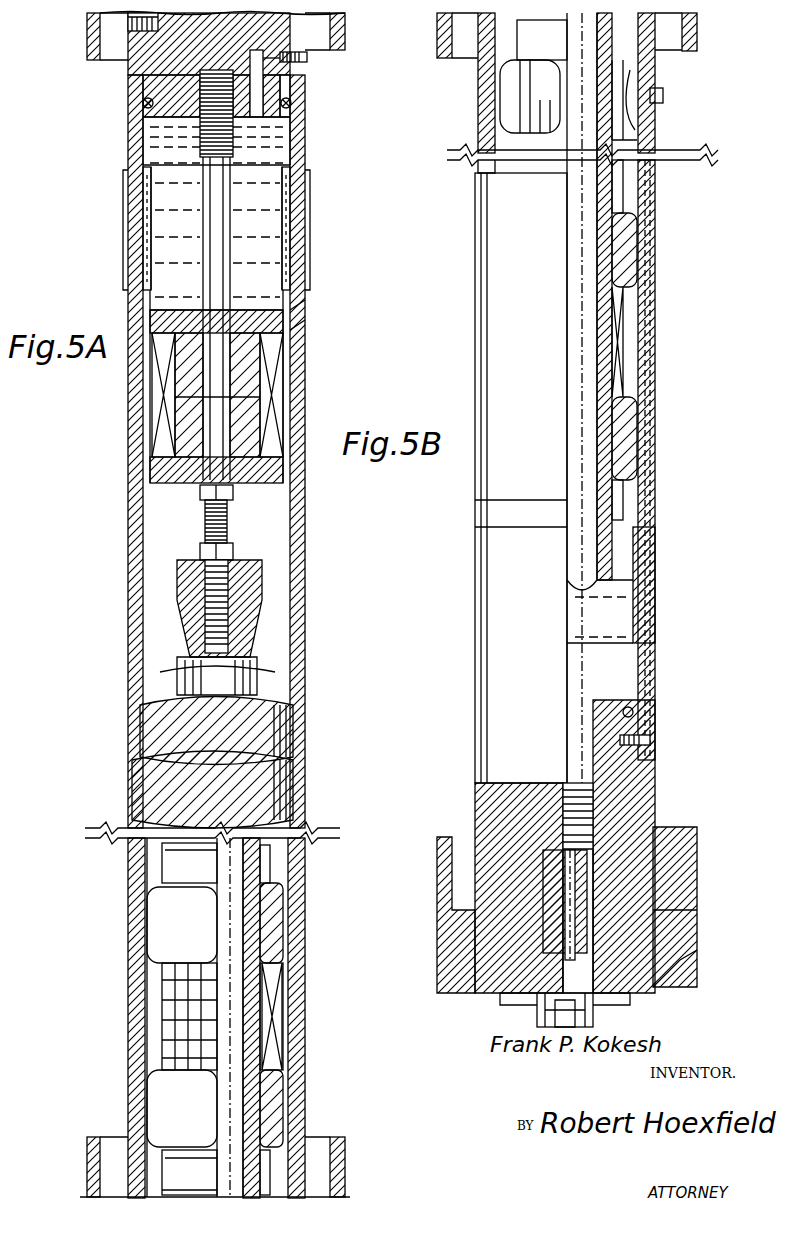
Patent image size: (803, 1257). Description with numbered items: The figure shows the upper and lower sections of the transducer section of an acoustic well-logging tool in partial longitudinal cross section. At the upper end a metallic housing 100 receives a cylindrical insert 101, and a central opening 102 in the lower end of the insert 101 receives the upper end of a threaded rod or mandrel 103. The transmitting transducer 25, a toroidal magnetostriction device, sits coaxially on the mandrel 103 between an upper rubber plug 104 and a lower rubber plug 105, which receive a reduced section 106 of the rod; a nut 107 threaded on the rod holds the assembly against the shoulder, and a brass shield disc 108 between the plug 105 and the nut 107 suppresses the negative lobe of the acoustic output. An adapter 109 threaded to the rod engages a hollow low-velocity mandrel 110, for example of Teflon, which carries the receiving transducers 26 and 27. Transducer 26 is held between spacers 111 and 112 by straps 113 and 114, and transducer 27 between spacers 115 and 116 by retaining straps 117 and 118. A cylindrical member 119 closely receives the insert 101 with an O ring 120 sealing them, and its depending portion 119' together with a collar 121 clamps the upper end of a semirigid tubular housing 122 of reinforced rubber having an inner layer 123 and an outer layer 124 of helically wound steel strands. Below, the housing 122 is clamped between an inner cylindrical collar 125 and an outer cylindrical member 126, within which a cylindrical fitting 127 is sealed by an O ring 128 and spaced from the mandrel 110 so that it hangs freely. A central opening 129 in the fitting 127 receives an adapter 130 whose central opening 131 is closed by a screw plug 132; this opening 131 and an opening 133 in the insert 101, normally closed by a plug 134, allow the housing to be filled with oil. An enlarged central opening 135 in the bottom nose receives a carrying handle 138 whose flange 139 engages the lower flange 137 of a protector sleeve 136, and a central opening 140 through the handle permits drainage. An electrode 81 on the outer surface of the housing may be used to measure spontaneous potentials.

In FIG. 5A, the transducer 25 is at (280, 390).
In FIG. 5A, the transducer 26 is at (270, 1010).
In FIG. 5B, the transducer 27 is at (620, 350).
In FIG. 5B, the electrode 81 is at (665, 95).
In FIG. 5A, the metallic housing 100 is at (300, 35).
In FIG. 5A, the insert 101 is at (165, 85).
In FIG. 5A, the central opening 102 is at (200, 72).
In FIG. 5A, the threaded rod or mandrel 103 is at (170, 140).
In FIG. 5A, the upper rubber plug 104 is at (290, 312).
In FIG. 5A, the lower rubber plug 105 is at (180, 428).
In FIG. 5A, the reduced section 106 is at (218, 352).
In FIG. 5A, the nut 107 is at (200, 492).
In FIG. 5A, the shield disc 108 is at (165, 472).
In FIG. 5A, the adapter 109 is at (195, 575).
In FIG. 5A, the mandrel 110 is at (170, 672).
In FIG. 5B, the mandrel 110 is at (605, 385).
In FIG. 5A, the upper spacer 111 is at (275, 915).
In FIG. 5A, the lower spacer 112 is at (275, 1095).
In FIG. 5A, the strap 113 is at (265, 875).
In FIG. 5A, the strap 114 is at (265, 1158).
In FIG. 5B, the spacer 115 is at (632, 245).
In FIG. 5B, the spacer 116 is at (632, 430).
In FIG. 5B, the retaining strap 117 is at (625, 195).
In FIG. 5B, the retaining strap 118 is at (620, 515).
In FIG. 5A, the cylindrical member 119 is at (268, 100).
In FIG. 5A, the depending portion 119' is at (252, 230).
In FIG. 5A, the O ring 120 is at (300, 110).
In FIG. 5A, the collar 121 is at (145, 178).
In FIG. 5A, the tubular enclosure or housing 122 is at (297, 332).
In FIG. 5B, the tubular enclosure or housing 122 is at (650, 273).
In FIG. 5A, the inner layer 123 is at (300, 708).
In FIG. 5B, the inner layer 123 is at (652, 295).
In FIG. 5A, the outer layer 124 is at (138, 785).
In FIG. 5B, the outer layer 124 is at (654, 312).
In FIG. 5B, the inner cylindrical collar 125 is at (620, 612).
In FIG. 5B, the outer cylindrical member 126 is at (650, 558).
In FIG. 5B, the cylindrical fitting 127 is at (483, 803).
In FIG. 5B, the O ring 128 is at (633, 712).
In FIG. 5B, the central opening 129 is at (590, 800).
In FIG. 5B, the adapter 130 is at (590, 832).
In FIG. 5B, the central opening 131 is at (590, 872).
In FIG. 5B, the screw plug 132 is at (538, 1005).
In FIG. 5A, the opening 133 is at (258, 75).
In FIG. 5A, the plug 134 is at (305, 58).
In FIG. 5B, the enlarged central opening 135 is at (600, 887).
In FIG. 5A, the sleeve 136 is at (92, 30).
In FIG. 5B, the sleeve 136 is at (690, 33).
In FIG. 5B, the lower flange 137 is at (670, 952).
In FIG. 5B, the carrying handle 138 is at (595, 1012).
In FIG. 5B, the flange 139 is at (612, 993).
In FIG. 5B, the central opening 140 is at (560, 1015).